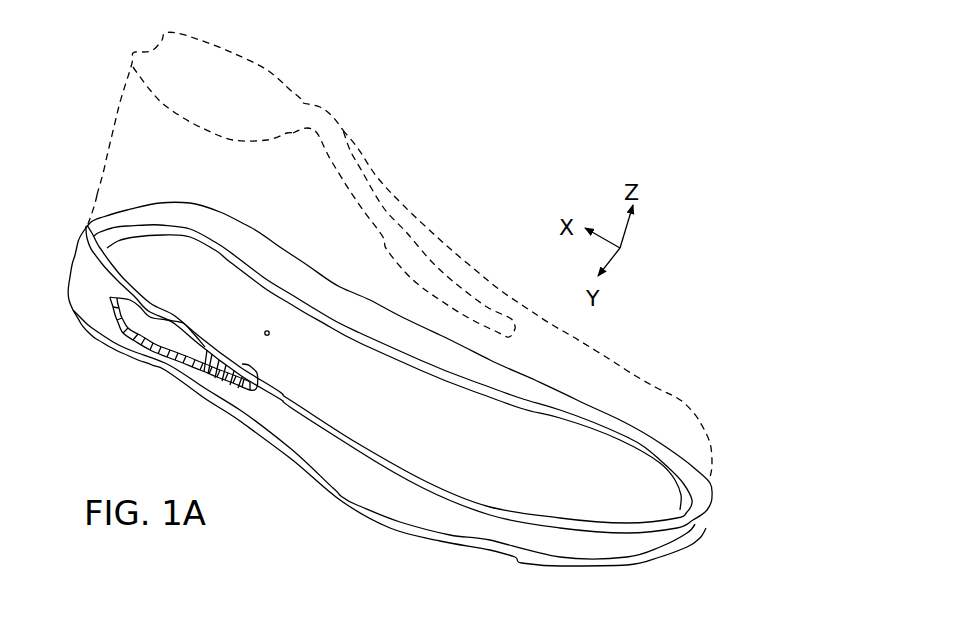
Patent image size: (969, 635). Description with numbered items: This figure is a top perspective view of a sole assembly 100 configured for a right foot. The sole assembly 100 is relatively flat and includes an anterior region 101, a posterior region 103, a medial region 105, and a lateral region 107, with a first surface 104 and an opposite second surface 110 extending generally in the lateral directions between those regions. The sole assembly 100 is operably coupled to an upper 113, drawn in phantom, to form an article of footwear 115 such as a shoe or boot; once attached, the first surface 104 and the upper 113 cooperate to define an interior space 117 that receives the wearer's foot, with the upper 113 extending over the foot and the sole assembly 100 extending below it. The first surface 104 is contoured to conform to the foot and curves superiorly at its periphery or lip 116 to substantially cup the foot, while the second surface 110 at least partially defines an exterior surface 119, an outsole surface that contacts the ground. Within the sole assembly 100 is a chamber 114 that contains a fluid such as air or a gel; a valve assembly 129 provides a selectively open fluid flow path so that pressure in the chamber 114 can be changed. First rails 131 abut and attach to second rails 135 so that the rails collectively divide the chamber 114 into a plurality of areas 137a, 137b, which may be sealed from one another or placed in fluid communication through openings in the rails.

The sole assembly 100 is at (189, 401).
The anterior region 101 is at (688, 527).
The posterior region 103 is at (72, 270).
The first surface 104 is at (399, 397).
The medial region 105 is at (423, 333).
The lateral region 107 is at (302, 438).
The second surface 110 is at (378, 522).
The upper 113 is at (303, 100).
The chamber 114 is at (133, 313).
The article of footwear 115 is at (450, 231).
The lip 116 is at (223, 229).
The interior space 117 is at (285, 282).
The exterior surface 119 is at (494, 535).
The valve assembly 129 is at (263, 328).
The first rails 131 is at (185, 366).
The second rails 135 is at (211, 348).
The area 137a is at (152, 331).
The area 137b is at (241, 377).